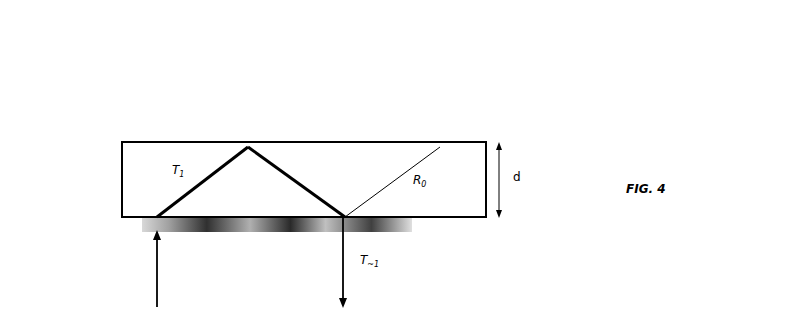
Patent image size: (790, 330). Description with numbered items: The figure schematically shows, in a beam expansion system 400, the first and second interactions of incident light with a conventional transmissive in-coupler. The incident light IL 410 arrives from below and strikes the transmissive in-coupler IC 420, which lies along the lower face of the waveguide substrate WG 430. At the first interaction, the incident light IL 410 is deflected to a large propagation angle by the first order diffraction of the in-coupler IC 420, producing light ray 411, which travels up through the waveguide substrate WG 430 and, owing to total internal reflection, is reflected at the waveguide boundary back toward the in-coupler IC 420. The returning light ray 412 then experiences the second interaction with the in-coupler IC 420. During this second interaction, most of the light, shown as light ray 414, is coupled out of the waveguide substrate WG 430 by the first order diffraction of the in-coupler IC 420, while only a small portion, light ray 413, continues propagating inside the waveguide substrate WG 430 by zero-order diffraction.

The beam expansion system 400 is at (553, 80).
The incident light IL 410 is at (155, 275).
The transmissive in-coupler IC 420 is at (148, 229).
The waveguide substrate WG 430 is at (128, 162).
The light ray 411 is at (163, 203).
The light ray 412 is at (297, 177).
The light ray 413 is at (383, 187).
The light ray 414 is at (347, 293).